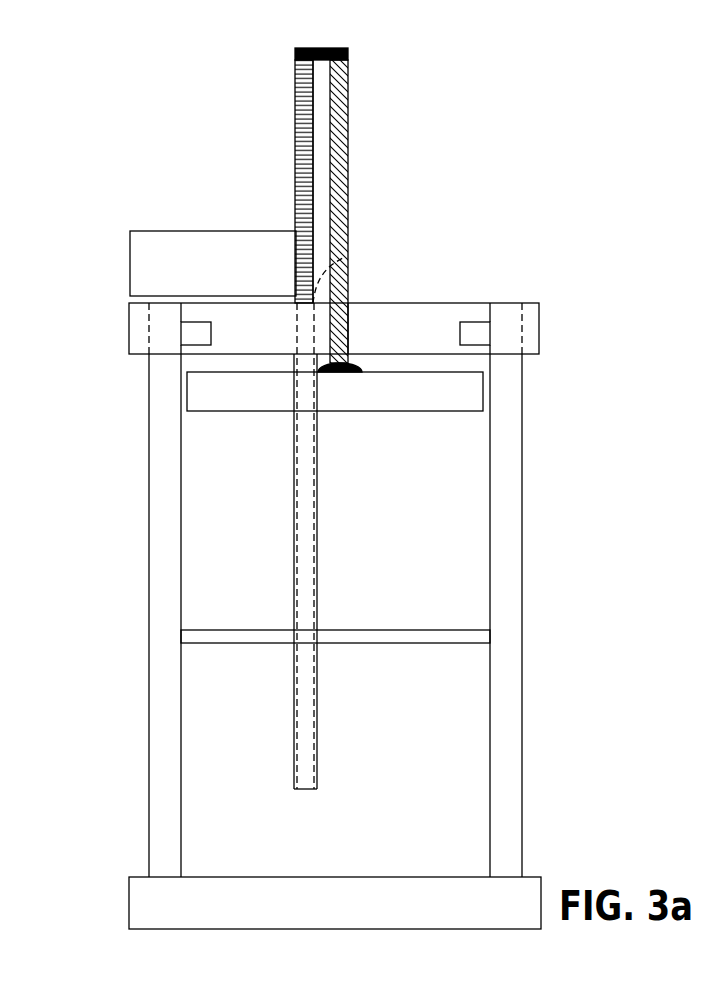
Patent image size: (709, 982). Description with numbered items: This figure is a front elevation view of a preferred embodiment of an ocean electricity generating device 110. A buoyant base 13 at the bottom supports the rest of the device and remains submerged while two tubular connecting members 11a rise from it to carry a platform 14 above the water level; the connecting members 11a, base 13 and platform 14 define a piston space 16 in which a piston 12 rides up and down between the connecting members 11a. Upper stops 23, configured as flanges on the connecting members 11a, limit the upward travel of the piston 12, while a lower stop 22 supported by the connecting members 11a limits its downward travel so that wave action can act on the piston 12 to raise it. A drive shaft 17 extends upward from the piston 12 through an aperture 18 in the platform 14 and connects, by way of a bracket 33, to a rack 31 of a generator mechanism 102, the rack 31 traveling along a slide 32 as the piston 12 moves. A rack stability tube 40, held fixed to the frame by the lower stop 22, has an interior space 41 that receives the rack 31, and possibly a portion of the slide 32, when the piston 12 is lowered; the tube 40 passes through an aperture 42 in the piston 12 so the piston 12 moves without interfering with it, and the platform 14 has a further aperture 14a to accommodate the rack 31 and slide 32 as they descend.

The ocean electricity generating device 110 is at (451, 131).
The base 13 is at (150, 907).
The connecting members 11a is at (170, 484).
The platform 14 is at (412, 302).
The upper stops 23 is at (196, 333).
The generator mechanism 102 is at (150, 253).
The slide 32 is at (297, 150).
The rack 31 is at (308, 178).
The drive shaft 17 is at (338, 170).
The bracket 33 is at (349, 52).
The aperture 14a is at (345, 257).
The aperture 18 is at (349, 303).
The piston 12 is at (212, 395).
The aperture 42 is at (307, 392).
The rack stability tube 40 is at (316, 589).
The interior space 41 is at (300, 569).
The lower stop 22 is at (212, 643).
The space 16 is at (264, 511).